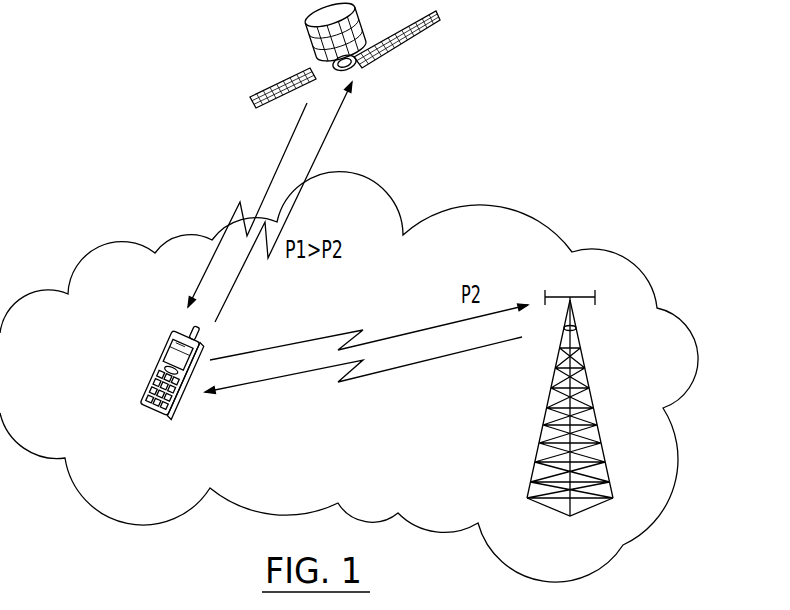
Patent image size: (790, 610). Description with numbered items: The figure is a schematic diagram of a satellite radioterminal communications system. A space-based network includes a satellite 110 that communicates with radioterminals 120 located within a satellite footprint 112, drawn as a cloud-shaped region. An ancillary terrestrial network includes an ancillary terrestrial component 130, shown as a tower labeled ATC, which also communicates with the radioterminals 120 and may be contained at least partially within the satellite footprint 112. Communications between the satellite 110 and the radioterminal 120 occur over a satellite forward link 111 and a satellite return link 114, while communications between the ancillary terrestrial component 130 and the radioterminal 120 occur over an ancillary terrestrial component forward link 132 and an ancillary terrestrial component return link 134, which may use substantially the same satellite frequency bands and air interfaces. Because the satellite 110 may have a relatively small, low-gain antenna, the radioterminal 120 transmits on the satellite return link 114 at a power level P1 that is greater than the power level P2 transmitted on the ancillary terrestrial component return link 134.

The satellite 110 is at (305, 47).
The satellite forward link 111 is at (277, 165).
The satellite footprint 112 is at (483, 204).
The satellite return link 114 is at (323, 145).
The radioterminal 120 is at (168, 362).
The ancillary terrestrial component 130 is at (550, 422).
The ancillary terrestrial component forward link 132 is at (396, 368).
The ancillary terrestrial component return link 134 is at (425, 329).